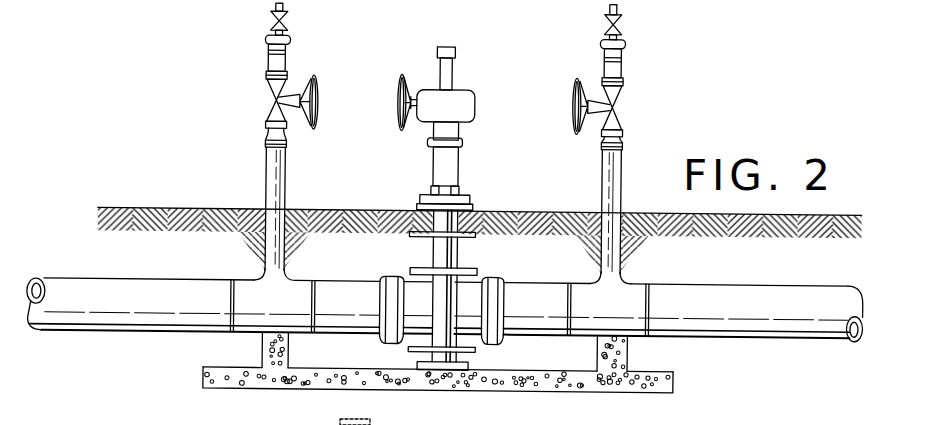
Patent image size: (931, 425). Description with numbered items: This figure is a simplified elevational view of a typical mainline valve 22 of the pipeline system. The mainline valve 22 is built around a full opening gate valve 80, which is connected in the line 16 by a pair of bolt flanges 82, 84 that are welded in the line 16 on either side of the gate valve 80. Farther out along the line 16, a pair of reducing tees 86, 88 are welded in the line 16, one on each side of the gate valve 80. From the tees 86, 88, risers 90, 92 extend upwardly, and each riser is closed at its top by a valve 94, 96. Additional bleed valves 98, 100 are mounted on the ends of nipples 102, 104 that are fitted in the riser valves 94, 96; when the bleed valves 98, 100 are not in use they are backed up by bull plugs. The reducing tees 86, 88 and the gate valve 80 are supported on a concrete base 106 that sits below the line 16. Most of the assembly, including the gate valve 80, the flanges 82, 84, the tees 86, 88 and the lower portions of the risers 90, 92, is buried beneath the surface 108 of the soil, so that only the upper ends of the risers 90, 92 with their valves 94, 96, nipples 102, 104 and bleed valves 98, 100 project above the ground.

The line 16 is at (64, 283).
The mainline valve 22 is at (208, 158).
The full opening gate valve 80 is at (455, 243).
The bolt flange 82 is at (396, 268).
The bolt flange 84 is at (497, 278).
The reducing tee 86 is at (253, 280).
The reducing tee 88 is at (627, 283).
The riser 90 is at (285, 182).
The riser 92 is at (620, 180).
The valve 94 is at (272, 106).
The valve 96 is at (615, 108).
The bleed valve 98 is at (266, 29).
The bleed valve 100 is at (617, 21).
The nipple 102 is at (266, 63).
The nipple 104 is at (617, 60).
The concrete base 106 is at (271, 392).
The surface of the soil 108 is at (155, 210).